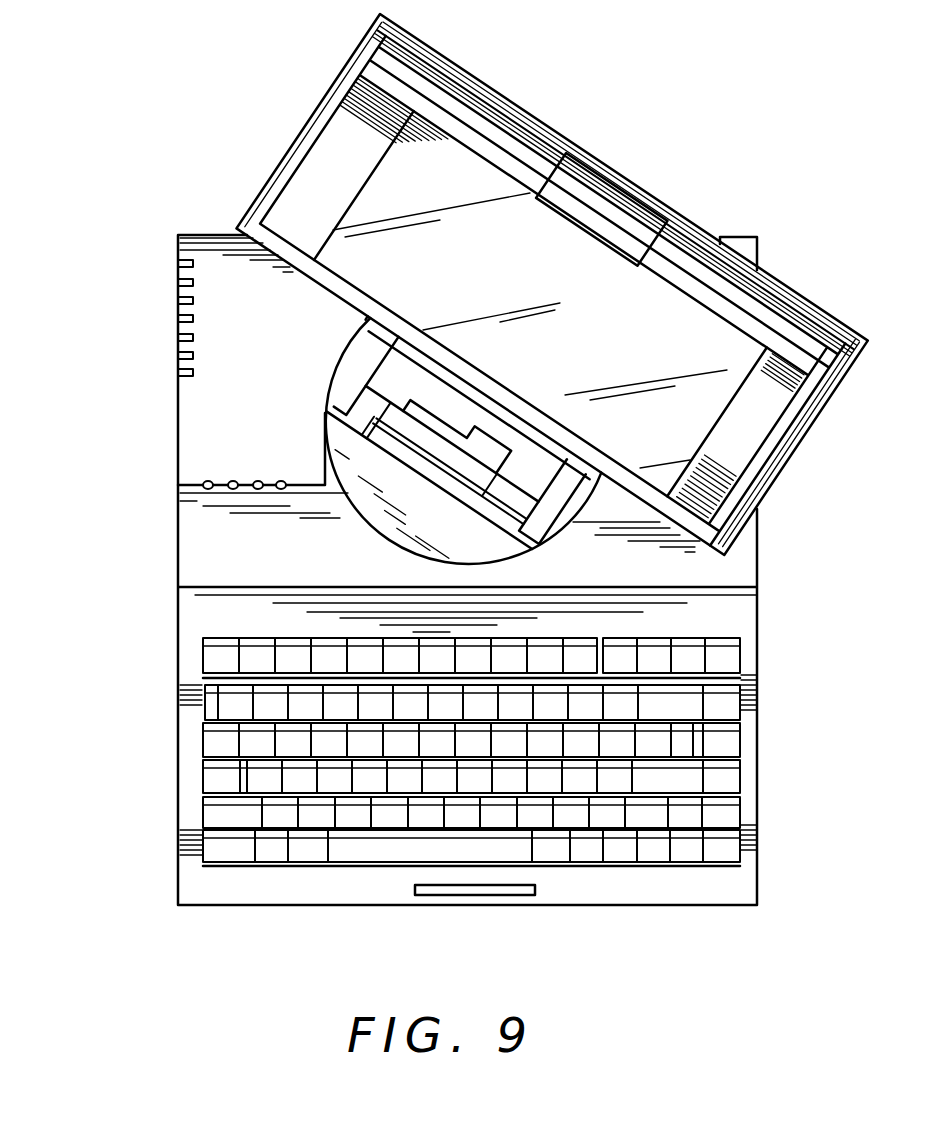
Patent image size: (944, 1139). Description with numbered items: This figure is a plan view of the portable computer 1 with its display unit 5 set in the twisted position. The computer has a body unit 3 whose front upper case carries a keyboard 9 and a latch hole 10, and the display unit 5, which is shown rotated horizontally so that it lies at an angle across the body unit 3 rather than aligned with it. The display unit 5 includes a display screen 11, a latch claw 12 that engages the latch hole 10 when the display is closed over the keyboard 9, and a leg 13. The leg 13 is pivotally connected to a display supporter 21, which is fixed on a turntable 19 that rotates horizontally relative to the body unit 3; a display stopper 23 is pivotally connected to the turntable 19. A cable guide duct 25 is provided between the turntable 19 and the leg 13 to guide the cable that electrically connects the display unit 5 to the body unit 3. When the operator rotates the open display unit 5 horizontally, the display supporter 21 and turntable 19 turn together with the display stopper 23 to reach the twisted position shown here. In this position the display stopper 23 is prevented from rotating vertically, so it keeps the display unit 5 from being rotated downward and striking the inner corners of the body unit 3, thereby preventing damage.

The portable computer 1 is at (138, 194).
The body unit 3 is at (180, 801).
The display unit 5 is at (830, 318).
The keyboard 9 is at (222, 706).
The latch hole 10 is at (466, 897).
The display screen 11 is at (377, 167).
The latch claw 12 is at (590, 218).
The leg 13 is at (405, 367).
The turntable 19 is at (387, 517).
The display supporter 21 is at (352, 362).
The display stopper 23 is at (568, 452).
The cable guide duct 25 is at (472, 433).